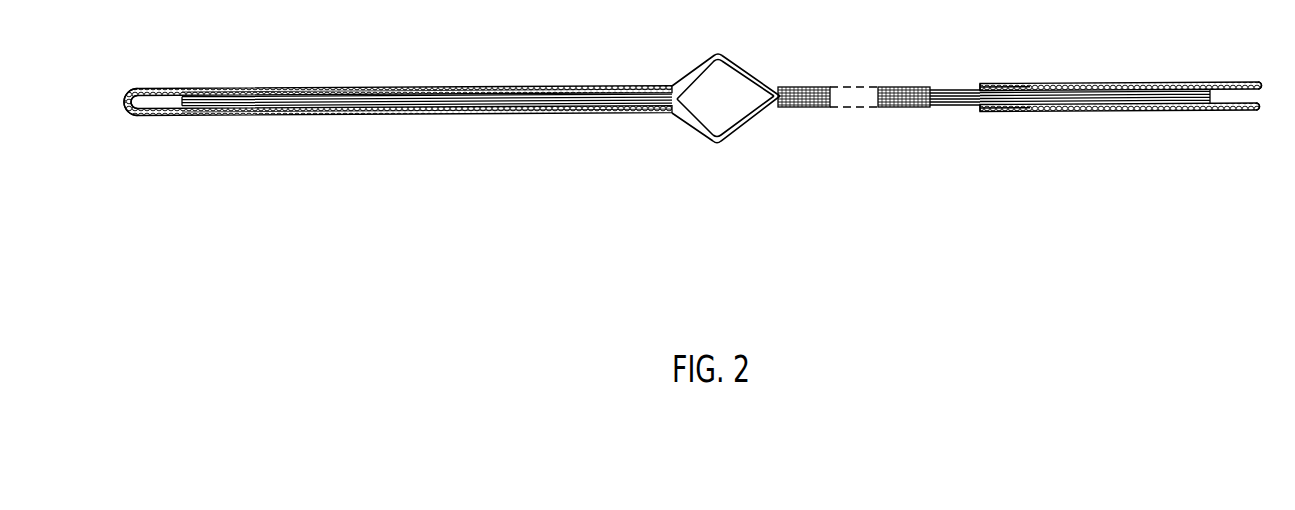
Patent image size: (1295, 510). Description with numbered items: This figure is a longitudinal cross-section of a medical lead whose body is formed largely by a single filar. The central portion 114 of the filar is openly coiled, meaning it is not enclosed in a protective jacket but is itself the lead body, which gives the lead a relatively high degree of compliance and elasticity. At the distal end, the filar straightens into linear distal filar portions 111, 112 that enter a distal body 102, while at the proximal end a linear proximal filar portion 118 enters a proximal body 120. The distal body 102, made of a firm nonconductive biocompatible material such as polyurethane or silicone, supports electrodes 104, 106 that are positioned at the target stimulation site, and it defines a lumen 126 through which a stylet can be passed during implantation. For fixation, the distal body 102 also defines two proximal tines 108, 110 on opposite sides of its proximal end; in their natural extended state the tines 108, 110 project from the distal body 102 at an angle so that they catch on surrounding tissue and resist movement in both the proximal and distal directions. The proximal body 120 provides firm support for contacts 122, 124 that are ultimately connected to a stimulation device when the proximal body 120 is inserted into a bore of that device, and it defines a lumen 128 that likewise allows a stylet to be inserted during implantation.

The distal body 102 is at (498, 87).
The electrode 104 is at (195, 92).
The electrode 106 is at (363, 88).
The proximal tine 108 is at (697, 67).
The proximal tine 110 is at (690, 130).
The distal filar portion 111 is at (748, 68).
The distal filar portion 112 is at (740, 135).
The central portion of filar 114 is at (783, 87).
The proximal filar portion 118 is at (952, 105).
The proximal body 120 is at (1003, 85).
The contact 122 is at (1058, 85).
The contact 124 is at (1198, 85).
The lumen 126 is at (155, 102).
The lumen 128 is at (1258, 97).